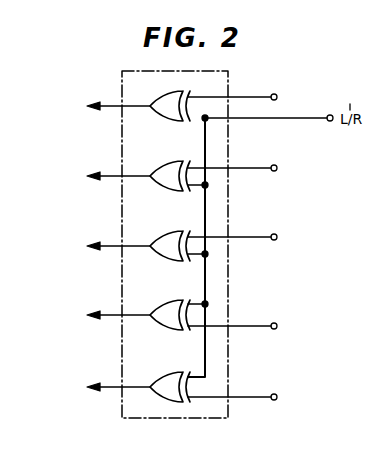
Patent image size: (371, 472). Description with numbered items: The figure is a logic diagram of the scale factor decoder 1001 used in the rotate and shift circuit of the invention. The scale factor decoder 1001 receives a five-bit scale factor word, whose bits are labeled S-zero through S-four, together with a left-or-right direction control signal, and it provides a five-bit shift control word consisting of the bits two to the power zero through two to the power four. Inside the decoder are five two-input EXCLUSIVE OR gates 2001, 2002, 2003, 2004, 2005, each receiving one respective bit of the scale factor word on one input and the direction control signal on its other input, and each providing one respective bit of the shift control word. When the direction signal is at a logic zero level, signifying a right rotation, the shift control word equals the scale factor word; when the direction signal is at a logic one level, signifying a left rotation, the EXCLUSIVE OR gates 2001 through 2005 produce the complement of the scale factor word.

The scale factor decoder 1001 is at (229, 82).
The two-input EXCLUSIVE OR gate 2001 is at (153, 96).
The two-input EXCLUSIVE OR gate 2002 is at (153, 163).
The two-input EXCLUSIVE OR gate 2003 is at (153, 233).
The two-input EXCLUSIVE OR gate 2004 is at (153, 302).
The two-input EXCLUSIVE OR gate 2005 is at (153, 374).